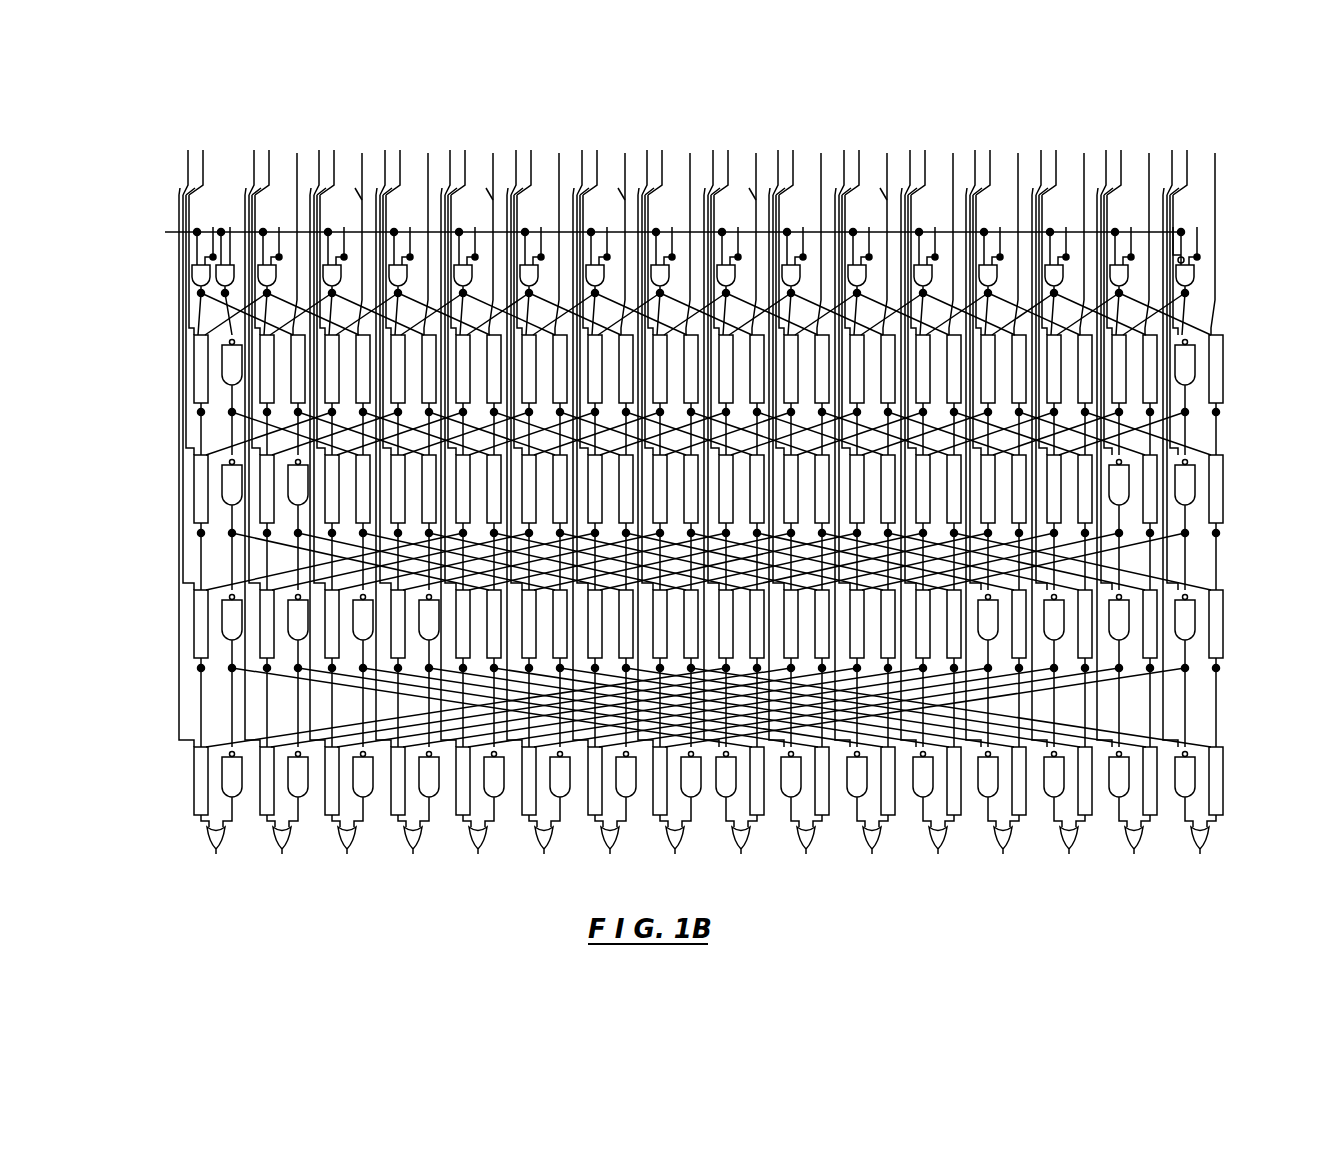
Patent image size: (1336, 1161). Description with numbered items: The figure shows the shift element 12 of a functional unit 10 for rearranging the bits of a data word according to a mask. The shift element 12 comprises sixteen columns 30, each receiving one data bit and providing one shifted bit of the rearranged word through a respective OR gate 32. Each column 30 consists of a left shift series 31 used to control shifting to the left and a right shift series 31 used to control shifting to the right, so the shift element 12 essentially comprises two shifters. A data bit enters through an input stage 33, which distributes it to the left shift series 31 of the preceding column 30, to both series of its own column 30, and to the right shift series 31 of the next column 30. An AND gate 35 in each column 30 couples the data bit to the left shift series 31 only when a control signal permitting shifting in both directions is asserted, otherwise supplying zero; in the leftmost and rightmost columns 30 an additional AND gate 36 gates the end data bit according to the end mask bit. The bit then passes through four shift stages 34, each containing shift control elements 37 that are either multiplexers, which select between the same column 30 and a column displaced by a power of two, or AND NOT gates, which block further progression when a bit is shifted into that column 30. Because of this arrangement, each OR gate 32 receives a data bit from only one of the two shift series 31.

The functional unit 10 is at (692, 529).
The shift element 12 is at (692, 529).
The column 30 is at (216, 887).
The shift series 31 is at (194, 834).
The OR gate 32 is at (210, 838).
The input stage 33 is at (148, 258).
The shift stage 34 is at (148, 373).
The AND gate 35 is at (196, 283).
The AND gate 36 is at (222, 291).
The shift control element 37 is at (155, 392).